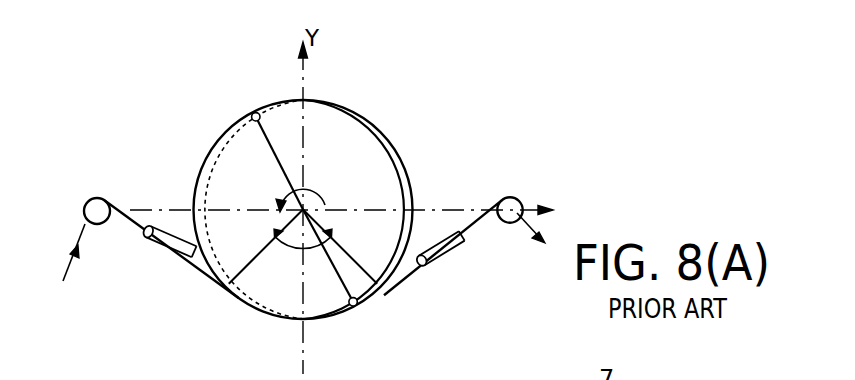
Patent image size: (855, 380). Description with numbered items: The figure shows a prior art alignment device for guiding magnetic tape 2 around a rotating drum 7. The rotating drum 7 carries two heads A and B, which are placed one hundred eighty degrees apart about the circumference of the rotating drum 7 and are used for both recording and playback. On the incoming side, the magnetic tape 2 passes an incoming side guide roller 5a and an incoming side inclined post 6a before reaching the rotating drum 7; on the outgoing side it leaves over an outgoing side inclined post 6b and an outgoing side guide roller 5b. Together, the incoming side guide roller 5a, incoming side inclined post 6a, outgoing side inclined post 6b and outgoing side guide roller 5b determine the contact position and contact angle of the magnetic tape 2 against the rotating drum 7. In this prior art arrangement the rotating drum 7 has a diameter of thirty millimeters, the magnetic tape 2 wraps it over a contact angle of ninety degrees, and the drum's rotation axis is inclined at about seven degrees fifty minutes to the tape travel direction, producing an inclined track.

The magnetic tape 2 is at (478, 207).
The incoming side guide roller 5a is at (100, 198).
The outgoing side guide roller 5b is at (506, 197).
The incoming side inclined post 6a is at (158, 243).
The outgoing side inclined post 6b is at (448, 256).
The rotating drum 7 is at (337, 177).
The head A is at (357, 305).
The head B is at (252, 116).